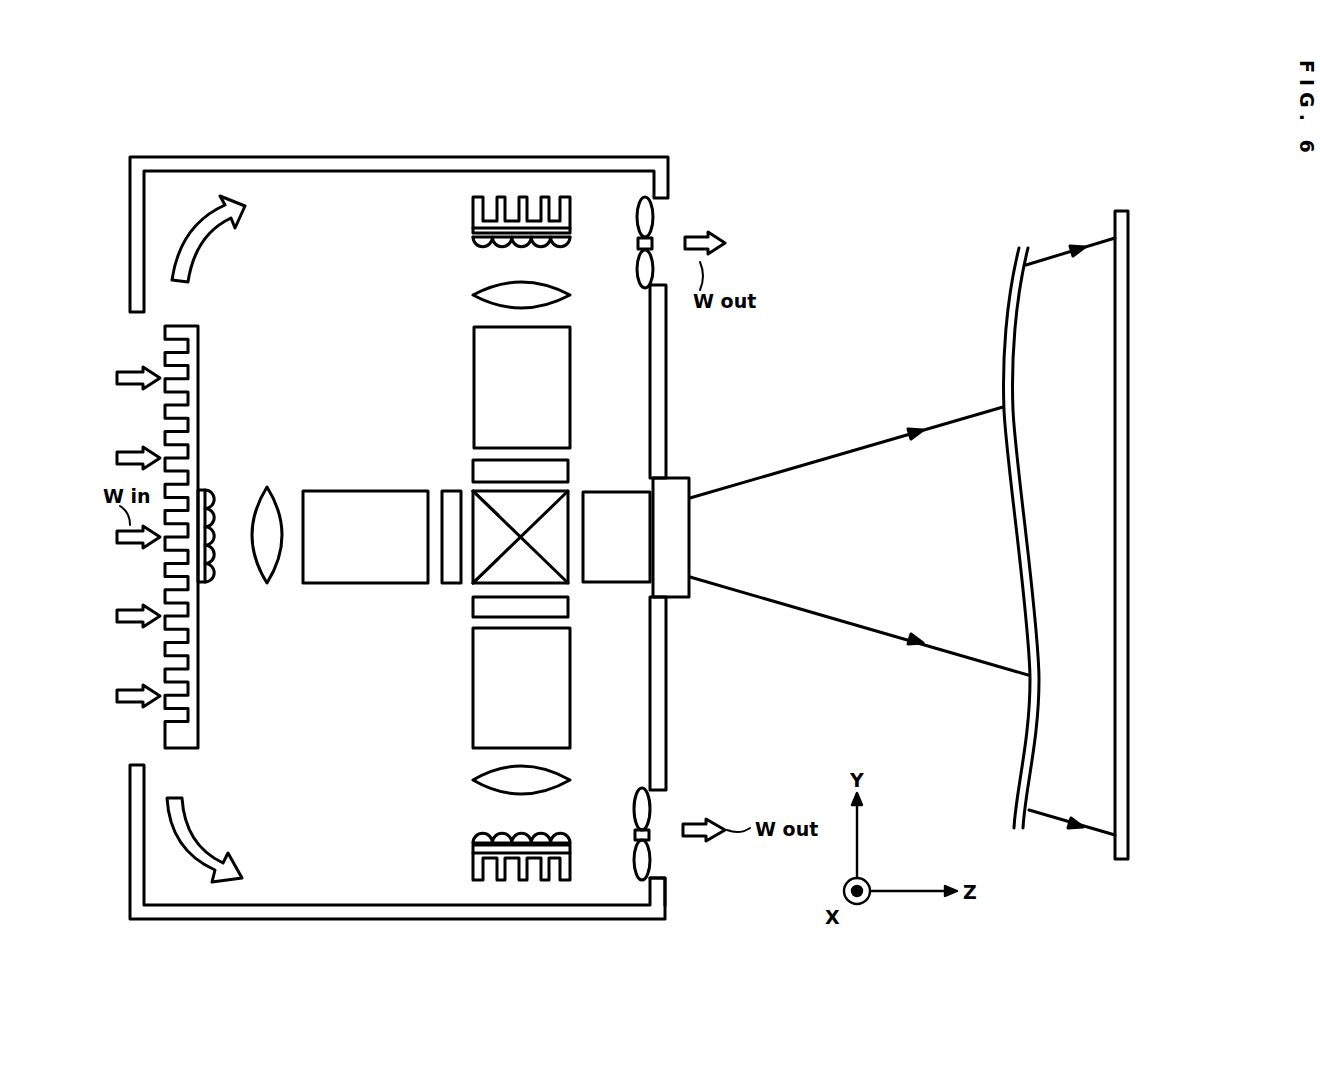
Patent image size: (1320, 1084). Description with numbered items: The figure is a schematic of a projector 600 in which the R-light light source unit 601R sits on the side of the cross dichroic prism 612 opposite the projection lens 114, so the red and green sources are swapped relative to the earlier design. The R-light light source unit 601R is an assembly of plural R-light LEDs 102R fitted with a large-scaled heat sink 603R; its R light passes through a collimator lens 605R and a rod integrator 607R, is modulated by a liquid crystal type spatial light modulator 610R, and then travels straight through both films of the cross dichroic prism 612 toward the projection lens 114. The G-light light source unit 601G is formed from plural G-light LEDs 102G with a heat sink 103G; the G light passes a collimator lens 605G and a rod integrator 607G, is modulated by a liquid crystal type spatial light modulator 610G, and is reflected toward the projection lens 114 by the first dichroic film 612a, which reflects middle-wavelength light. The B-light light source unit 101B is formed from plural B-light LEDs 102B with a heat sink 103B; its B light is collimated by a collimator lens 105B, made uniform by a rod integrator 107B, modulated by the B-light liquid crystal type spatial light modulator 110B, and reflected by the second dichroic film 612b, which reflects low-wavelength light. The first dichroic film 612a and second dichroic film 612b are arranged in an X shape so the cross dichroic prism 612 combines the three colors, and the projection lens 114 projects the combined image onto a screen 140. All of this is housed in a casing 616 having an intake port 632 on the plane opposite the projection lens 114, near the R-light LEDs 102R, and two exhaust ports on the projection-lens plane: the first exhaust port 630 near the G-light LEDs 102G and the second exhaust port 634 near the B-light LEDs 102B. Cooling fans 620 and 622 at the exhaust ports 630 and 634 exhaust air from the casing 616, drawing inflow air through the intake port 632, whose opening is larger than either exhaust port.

The projector 600 is at (803, 210).
The casing 616 is at (578, 158).
The intake port 632 is at (130, 763).
The first exhaust port 630 is at (667, 880).
The second exhaust port 634 is at (667, 320).
The cooling fan 622 is at (655, 215).
The cooling fan 620 is at (650, 805).
The heat sink 603R is at (200, 695).
The R-light light source unit 601R is at (207, 490).
The R-light LED 102R is at (215, 585).
The collimator lens 605R is at (268, 487).
The rod integrator 607R is at (356, 492).
The liquid crystal type spatial light modulator 610R is at (452, 583).
The cross dichroic prism 612 is at (568, 495).
The first dichroic film 612a is at (478, 584).
The second dichroic film 612b is at (478, 492).
The B-light liquid crystal type spatial light modulator 110B is at (572, 460).
The liquid crystal type spatial light modulator 610G is at (568, 607).
The rod integrator 107B is at (476, 372).
The rod integrator 607G is at (568, 708).
The collimator lens 105B is at (480, 295).
The collimator lens 605G is at (570, 785).
The B-light light source unit 101B is at (503, 231).
The heat sink 103B is at (568, 200).
The B-light LED 102B is at (550, 247).
The G-light light source unit 601G is at (500, 852).
The heat sink 103G is at (560, 878).
The G-light LED 102G is at (545, 838).
The projection lens 114 is at (672, 598).
The screen 140 is at (1122, 860).